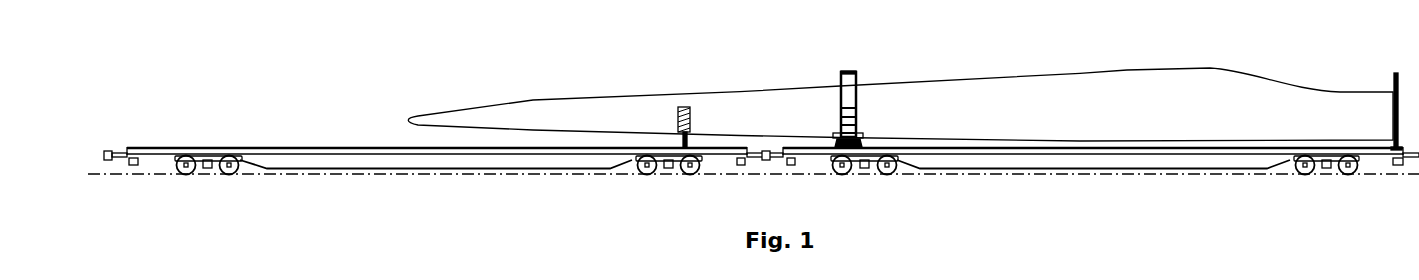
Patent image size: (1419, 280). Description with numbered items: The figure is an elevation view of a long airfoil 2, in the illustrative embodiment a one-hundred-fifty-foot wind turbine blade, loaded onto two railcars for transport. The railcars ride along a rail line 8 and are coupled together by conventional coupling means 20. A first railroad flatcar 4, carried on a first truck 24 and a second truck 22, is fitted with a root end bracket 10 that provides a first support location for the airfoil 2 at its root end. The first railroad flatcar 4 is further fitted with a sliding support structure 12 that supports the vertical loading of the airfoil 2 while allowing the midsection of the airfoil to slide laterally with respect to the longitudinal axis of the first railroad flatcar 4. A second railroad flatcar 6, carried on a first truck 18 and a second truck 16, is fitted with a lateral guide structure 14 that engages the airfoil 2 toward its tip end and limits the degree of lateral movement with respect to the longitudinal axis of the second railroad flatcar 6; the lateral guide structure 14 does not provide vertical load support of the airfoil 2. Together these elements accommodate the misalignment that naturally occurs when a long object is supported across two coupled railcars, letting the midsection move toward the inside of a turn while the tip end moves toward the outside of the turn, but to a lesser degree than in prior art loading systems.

The airfoil 2 is at (1080, 72).
The first railroad flatcar 4 is at (1075, 158).
The second railroad flatcar 6 is at (402, 158).
The rail line 8 is at (106, 176).
The root end bracket 10 is at (1400, 100).
The sliding support structure 12 is at (840, 80).
The lateral guide structure 14 is at (678, 120).
The second truck 16 is at (192, 174).
The first truck 18 is at (657, 174).
The coupling means 20 is at (766, 160).
The second truck 22 is at (848, 172).
The first truck 24 is at (1340, 174).